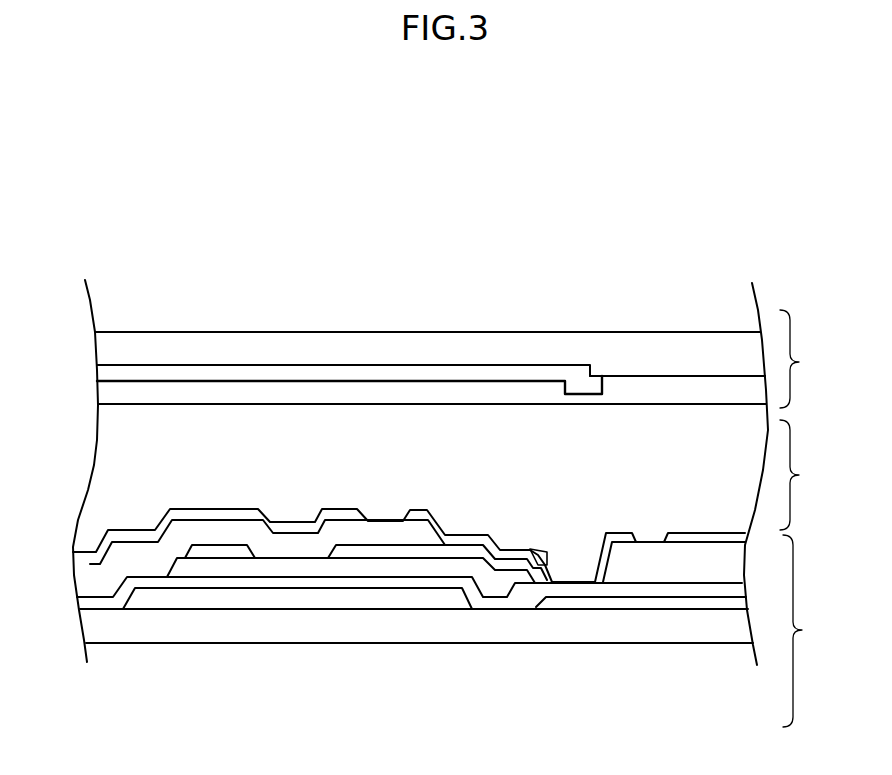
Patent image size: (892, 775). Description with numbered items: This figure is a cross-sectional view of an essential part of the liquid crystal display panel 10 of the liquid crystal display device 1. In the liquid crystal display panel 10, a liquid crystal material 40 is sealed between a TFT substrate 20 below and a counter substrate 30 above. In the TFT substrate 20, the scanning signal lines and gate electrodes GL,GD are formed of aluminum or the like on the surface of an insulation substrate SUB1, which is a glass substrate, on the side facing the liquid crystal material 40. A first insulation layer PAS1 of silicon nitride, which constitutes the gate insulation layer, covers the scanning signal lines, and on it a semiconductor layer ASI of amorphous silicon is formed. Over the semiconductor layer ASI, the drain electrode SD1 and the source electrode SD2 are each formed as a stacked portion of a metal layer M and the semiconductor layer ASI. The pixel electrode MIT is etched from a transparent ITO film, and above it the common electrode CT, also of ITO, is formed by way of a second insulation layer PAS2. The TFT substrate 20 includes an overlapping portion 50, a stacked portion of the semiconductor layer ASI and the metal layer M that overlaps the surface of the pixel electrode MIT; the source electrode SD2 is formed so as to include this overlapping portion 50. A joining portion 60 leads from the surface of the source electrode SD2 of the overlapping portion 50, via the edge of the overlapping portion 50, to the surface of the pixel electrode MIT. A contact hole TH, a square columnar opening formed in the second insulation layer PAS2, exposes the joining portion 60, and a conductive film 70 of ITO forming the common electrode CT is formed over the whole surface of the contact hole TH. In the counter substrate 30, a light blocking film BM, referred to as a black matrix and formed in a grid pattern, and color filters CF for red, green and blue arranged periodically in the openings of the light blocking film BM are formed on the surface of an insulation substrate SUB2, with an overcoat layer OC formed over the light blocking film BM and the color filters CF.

The liquid crystal display device 1 is at (431, 121).
The liquid crystal display panel 10 is at (378, 253).
The TFT substrate 20 is at (811, 631).
The counter substrate 30 is at (808, 359).
The liquid crystal material 40 is at (808, 475).
The overlapping portion 50 is at (533, 585).
The joining portion 60 is at (520, 530).
The conductive film 70 is at (549, 562).
The light blocking film BM is at (282, 375).
The insulation substrate SUB2 is at (418, 335).
The color filter CF is at (614, 372).
The overcoat layer OC is at (700, 390).
The second insulation layer PAS2 is at (248, 540).
The metal layer M is at (255, 537).
The common electrode CT is at (253, 536).
The drain electrode SD1 is at (217, 553).
The source electrode SD2 is at (365, 555).
The contact hole TH is at (578, 517).
The scanning signal line and gate electrode GL,GD is at (303, 602).
The semiconductor layer ASI is at (350, 600).
The insulation substrate SUB1 is at (427, 630).
The first insulation layer PAS1 is at (537, 602).
The pixel electrode MIT is at (635, 592).